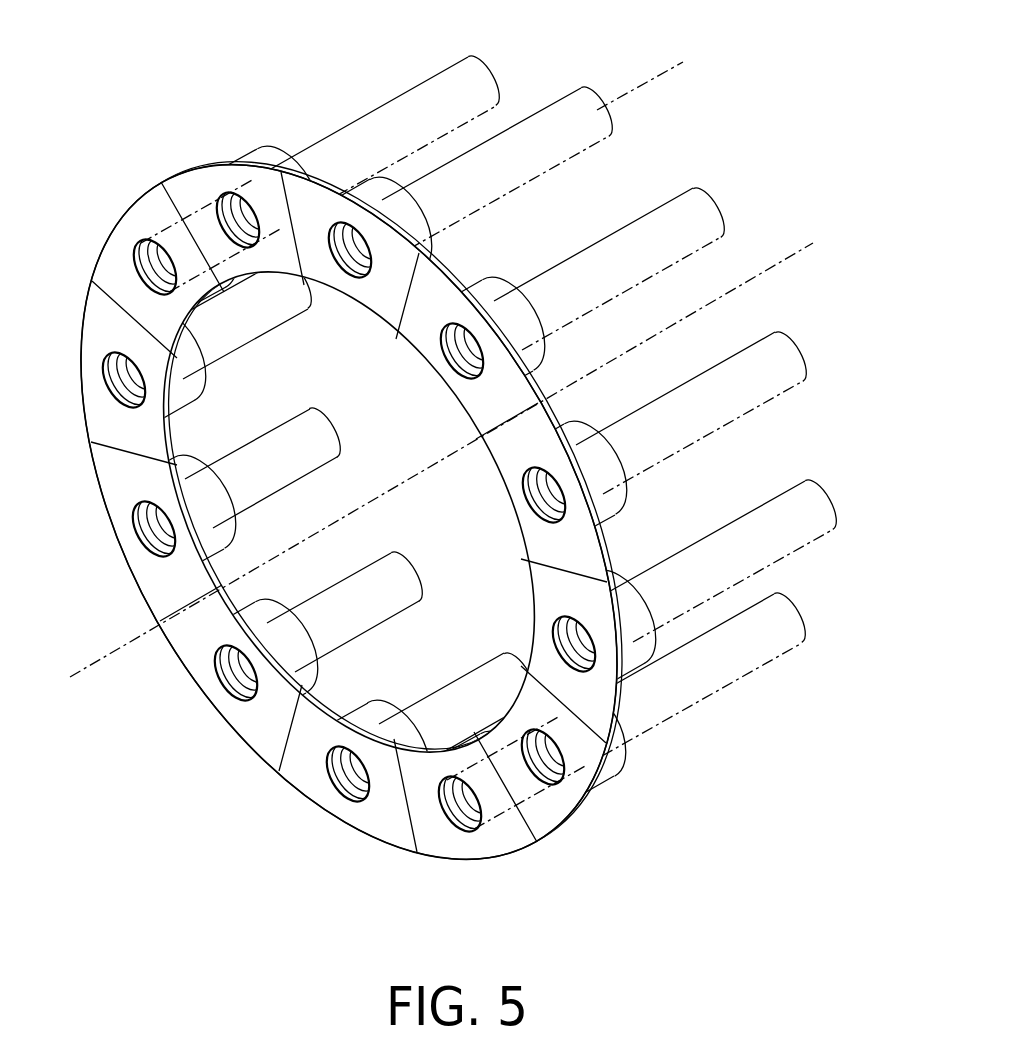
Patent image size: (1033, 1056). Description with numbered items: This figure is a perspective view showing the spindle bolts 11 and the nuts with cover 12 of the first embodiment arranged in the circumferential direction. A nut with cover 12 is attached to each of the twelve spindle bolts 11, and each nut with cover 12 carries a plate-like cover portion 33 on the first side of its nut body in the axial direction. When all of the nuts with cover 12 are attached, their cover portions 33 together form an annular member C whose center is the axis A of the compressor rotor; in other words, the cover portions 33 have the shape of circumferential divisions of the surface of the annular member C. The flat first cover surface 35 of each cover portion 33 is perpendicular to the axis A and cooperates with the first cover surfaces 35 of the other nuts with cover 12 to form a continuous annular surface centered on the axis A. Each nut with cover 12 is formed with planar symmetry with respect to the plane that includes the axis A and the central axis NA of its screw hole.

The spindle bolt 11 is at (376, 92).
The nut with cover 12 is at (372, 295).
The cover portion 33 is at (397, 514).
The first cover surface 35 is at (187, 193).
The axis A is at (778, 262).
The central axis of the screw hole NA is at (652, 77).
The annular member C is at (146, 186).